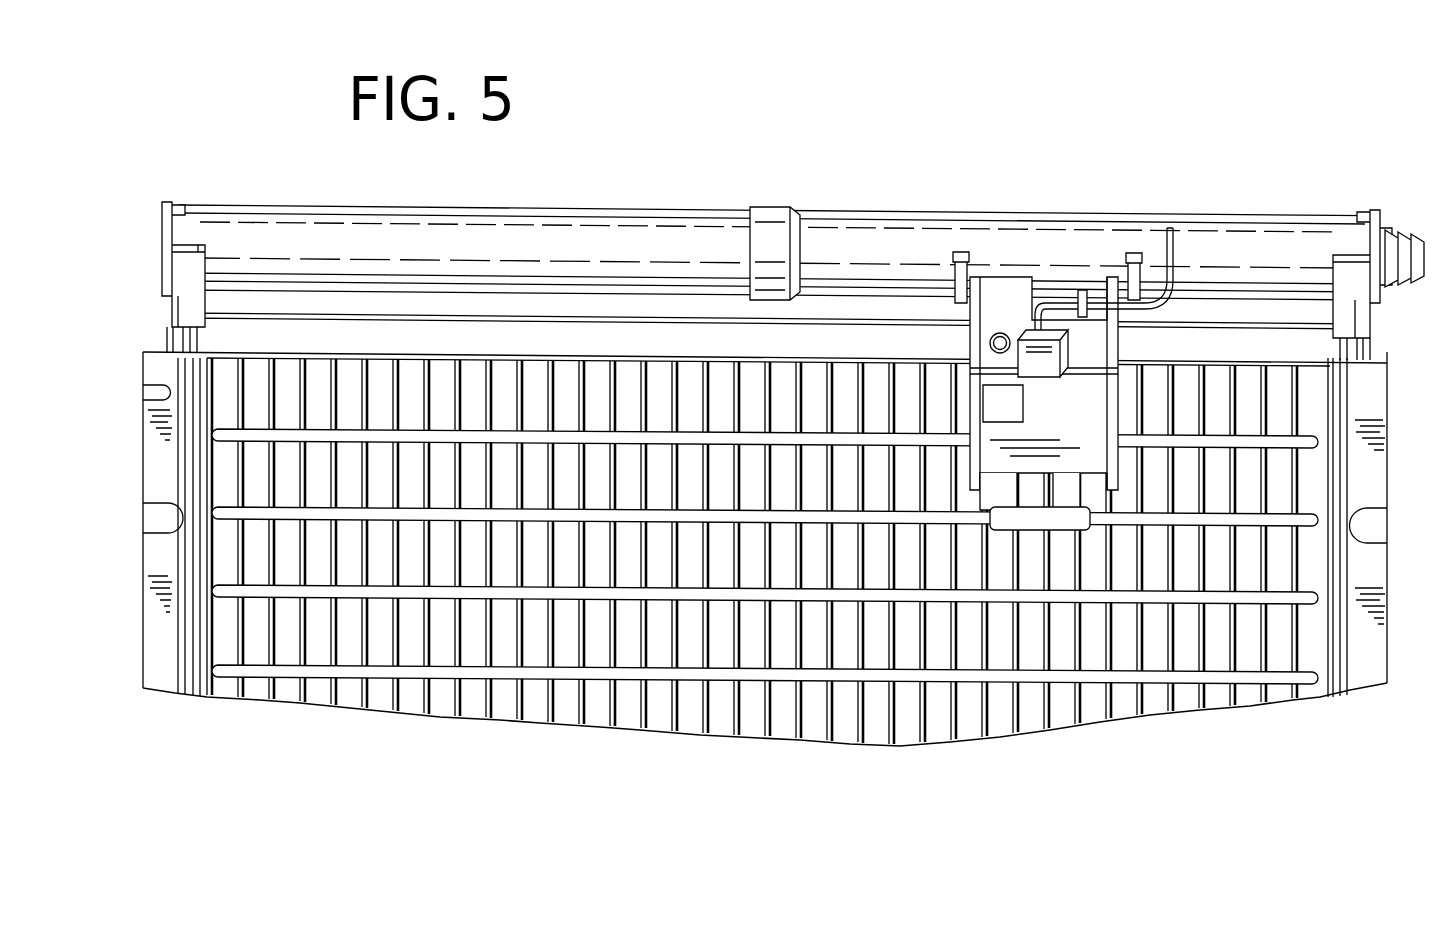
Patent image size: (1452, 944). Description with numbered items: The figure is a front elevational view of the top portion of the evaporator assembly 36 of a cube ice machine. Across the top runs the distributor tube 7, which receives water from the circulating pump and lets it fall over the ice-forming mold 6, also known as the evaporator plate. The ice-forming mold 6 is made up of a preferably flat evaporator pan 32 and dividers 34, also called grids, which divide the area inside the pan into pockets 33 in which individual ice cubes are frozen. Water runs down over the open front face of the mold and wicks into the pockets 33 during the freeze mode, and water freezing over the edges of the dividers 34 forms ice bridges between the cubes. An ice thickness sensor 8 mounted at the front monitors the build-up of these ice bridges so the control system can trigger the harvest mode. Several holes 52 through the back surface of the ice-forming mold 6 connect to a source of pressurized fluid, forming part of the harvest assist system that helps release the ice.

The ice-forming mold 6 is at (1240, 693).
The distributor tube 7 is at (352, 207).
The ice thickness sensor 8 is at (1019, 330).
The evaporator pan 32 is at (1116, 706).
The pockets 33 is at (1185, 473).
The dividers 34 is at (668, 736).
The evaporator assembly 36 is at (765, 557).
The hole 52 is at (1181, 487).